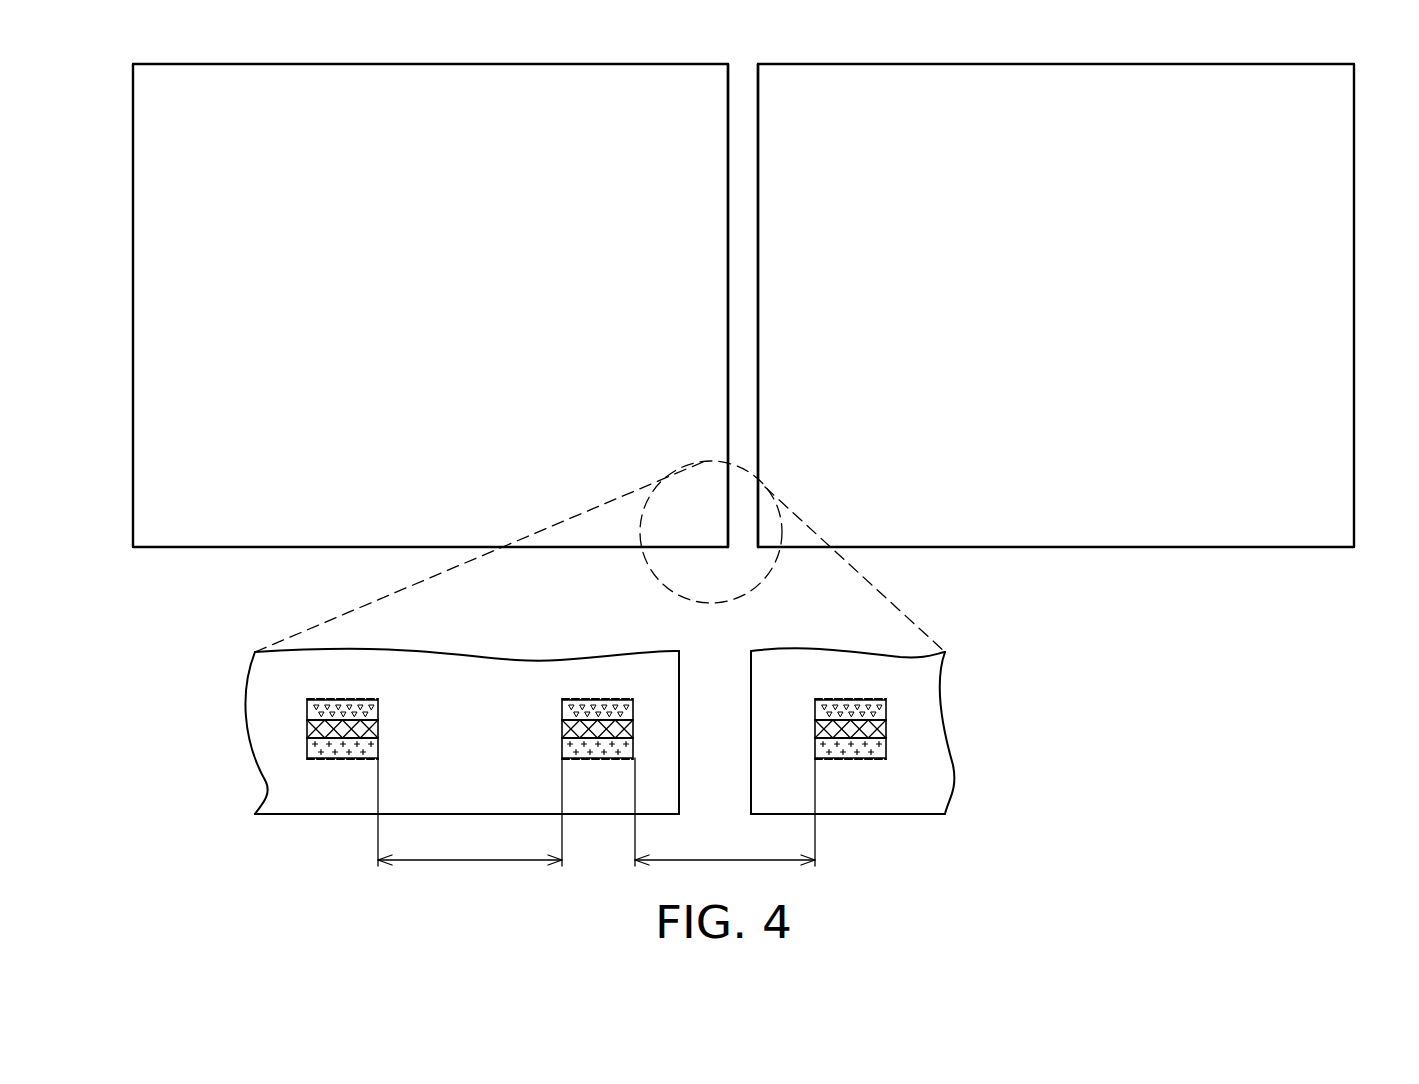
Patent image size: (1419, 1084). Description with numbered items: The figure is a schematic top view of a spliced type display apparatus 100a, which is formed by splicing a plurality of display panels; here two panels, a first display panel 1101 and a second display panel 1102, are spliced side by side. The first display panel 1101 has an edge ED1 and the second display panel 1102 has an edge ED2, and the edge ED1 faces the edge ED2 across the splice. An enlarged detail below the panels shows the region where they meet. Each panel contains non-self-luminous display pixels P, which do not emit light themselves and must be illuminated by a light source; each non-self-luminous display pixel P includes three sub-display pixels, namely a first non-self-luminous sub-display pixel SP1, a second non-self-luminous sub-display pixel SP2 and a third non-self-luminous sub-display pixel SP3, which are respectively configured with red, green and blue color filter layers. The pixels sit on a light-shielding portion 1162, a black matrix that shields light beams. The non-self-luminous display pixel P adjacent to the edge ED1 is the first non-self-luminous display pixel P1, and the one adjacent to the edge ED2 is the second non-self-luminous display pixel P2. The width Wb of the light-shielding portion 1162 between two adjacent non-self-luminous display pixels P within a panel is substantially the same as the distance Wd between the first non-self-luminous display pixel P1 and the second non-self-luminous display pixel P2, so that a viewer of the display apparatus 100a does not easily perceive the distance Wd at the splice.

The display apparatus 100a is at (732, 478).
The first display panel 1101 is at (150, 484).
The second display panel 1102 is at (1335, 484).
The edge ED1 is at (728, 207).
The edge ED2 is at (758, 207).
The light-shielding portion 1162 is at (311, 803).
The non-self-luminous display pixel P is at (288, 709).
The first non-self-luminous display pixel P1 is at (562, 728).
The second non-self-luminous display pixel P2 is at (886, 728).
The first non-self-luminous sub-display pixel SP1 is at (307, 706).
The second non-self-luminous sub-display pixel SP2 is at (307, 729).
The third non-self-luminous sub-display pixel SP3 is at (307, 745).
The width Wb is at (470, 812).
The distance Wd is at (725, 812).